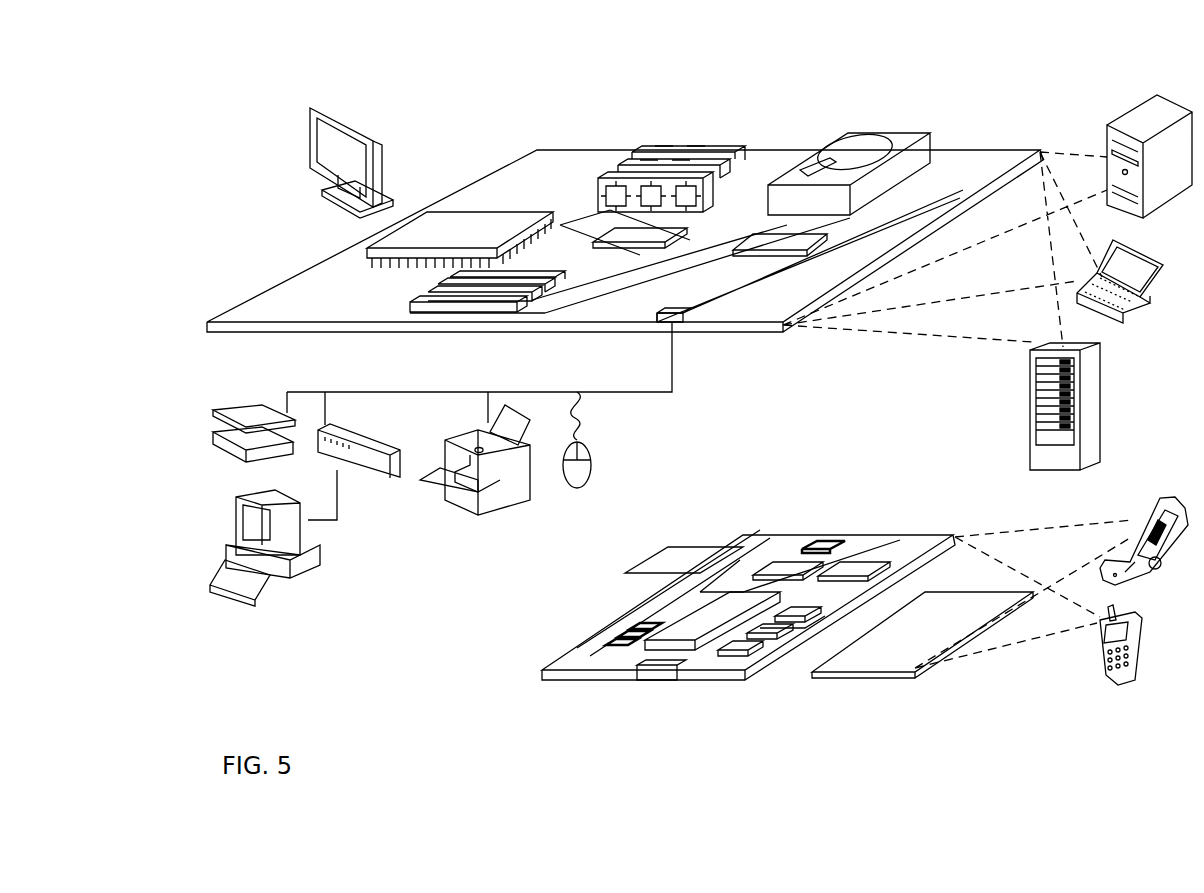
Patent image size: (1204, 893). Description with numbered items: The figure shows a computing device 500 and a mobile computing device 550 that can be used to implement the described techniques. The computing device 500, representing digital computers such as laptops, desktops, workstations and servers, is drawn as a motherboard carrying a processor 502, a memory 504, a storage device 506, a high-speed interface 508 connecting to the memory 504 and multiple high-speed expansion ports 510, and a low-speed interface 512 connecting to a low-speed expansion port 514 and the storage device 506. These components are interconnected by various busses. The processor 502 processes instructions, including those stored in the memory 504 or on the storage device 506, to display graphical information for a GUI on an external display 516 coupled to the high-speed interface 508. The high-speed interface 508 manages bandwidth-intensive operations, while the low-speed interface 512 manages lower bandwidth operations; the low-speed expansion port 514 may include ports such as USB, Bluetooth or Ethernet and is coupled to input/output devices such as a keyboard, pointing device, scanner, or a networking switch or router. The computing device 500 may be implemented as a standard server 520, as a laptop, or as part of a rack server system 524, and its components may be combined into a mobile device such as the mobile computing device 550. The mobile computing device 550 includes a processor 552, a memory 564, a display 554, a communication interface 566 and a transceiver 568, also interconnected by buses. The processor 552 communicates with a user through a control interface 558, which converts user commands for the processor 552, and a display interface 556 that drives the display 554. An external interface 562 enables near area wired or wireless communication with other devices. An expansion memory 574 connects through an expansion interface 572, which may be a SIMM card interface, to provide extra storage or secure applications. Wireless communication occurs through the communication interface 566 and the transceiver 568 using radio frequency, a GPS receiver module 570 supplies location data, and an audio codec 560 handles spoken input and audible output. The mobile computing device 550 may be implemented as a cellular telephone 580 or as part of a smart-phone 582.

The computing device 500 is at (477, 130).
The processor 502 is at (367, 252).
The memory 504 is at (646, 160).
The storage device 506 is at (836, 140).
The high-speed interface 508 is at (586, 222).
The high-speed expansion ports 510 is at (420, 298).
The low-speed interface 512 is at (762, 240).
The low-speed expansion port 514 is at (675, 323).
The display 516 is at (318, 108).
The standard server 520 is at (1107, 142).
The rack server system 524 is at (1030, 426).
The mobile computing device 550 is at (520, 680).
The processor 552 is at (692, 645).
The display 554 is at (888, 666).
The display interface 556 is at (748, 652).
The control interface 558 is at (775, 636).
The audio codec 560 is at (800, 615).
The external interface 562 is at (660, 676).
The memory 564 is at (614, 635).
The communication interface 566 is at (788, 567).
The transceiver 568 is at (855, 566).
The GPS receiver module 570 is at (832, 540).
The expansion interface 572 is at (730, 545).
The expansion memory 574 is at (668, 548).
The cellular telephone 580 is at (1140, 496).
The smart-phone 582 is at (1104, 648).